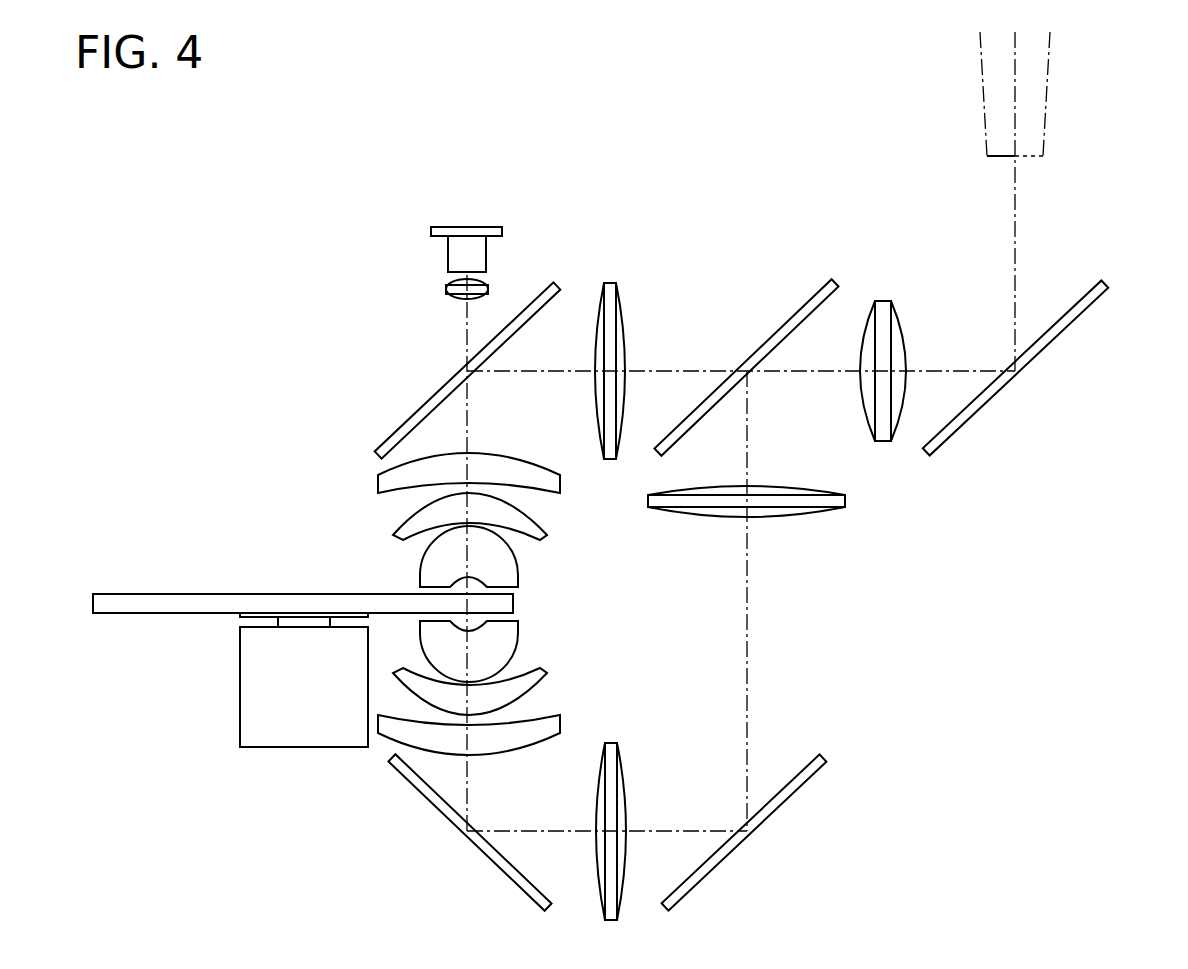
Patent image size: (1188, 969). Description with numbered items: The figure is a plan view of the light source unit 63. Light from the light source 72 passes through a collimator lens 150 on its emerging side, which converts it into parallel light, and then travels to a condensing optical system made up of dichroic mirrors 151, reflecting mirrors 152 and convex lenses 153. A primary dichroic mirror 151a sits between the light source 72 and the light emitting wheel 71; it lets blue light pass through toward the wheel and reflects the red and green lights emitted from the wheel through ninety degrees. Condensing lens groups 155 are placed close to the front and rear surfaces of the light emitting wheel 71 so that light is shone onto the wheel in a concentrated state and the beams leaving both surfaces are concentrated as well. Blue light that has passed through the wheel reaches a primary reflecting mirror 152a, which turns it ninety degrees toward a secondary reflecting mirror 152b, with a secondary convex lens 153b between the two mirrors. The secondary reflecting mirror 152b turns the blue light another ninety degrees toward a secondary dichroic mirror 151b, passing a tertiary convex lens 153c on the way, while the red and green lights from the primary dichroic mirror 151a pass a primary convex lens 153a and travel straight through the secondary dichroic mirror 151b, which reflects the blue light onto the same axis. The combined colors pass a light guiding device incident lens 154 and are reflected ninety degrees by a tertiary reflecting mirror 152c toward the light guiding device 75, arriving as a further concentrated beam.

The light source unit 63 is at (190, 265).
The light emitting wheel 71 is at (166, 620).
The light source 72 is at (451, 227).
The light guiding device 75 is at (1035, 98).
The collimator lens 150 is at (446, 290).
The dichroic mirrors 151 is at (567, 330).
The primary dichroic mirror 151a is at (417, 422).
The secondary dichroic mirror 151b is at (808, 305).
The reflecting mirrors 152 is at (755, 595).
The primary reflecting mirror 152a is at (415, 782).
The secondary reflecting mirror 152b is at (807, 773).
The tertiary reflecting mirror 152c is at (1073, 318).
The convex lenses 153 is at (735, 540).
The primary convex lens 153a is at (612, 283).
The secondary convex lens 153b is at (612, 747).
The tertiary convex lens 153c is at (790, 509).
The light guiding device incident lens 154 is at (882, 310).
The condensing lens groups 155 is at (572, 665).